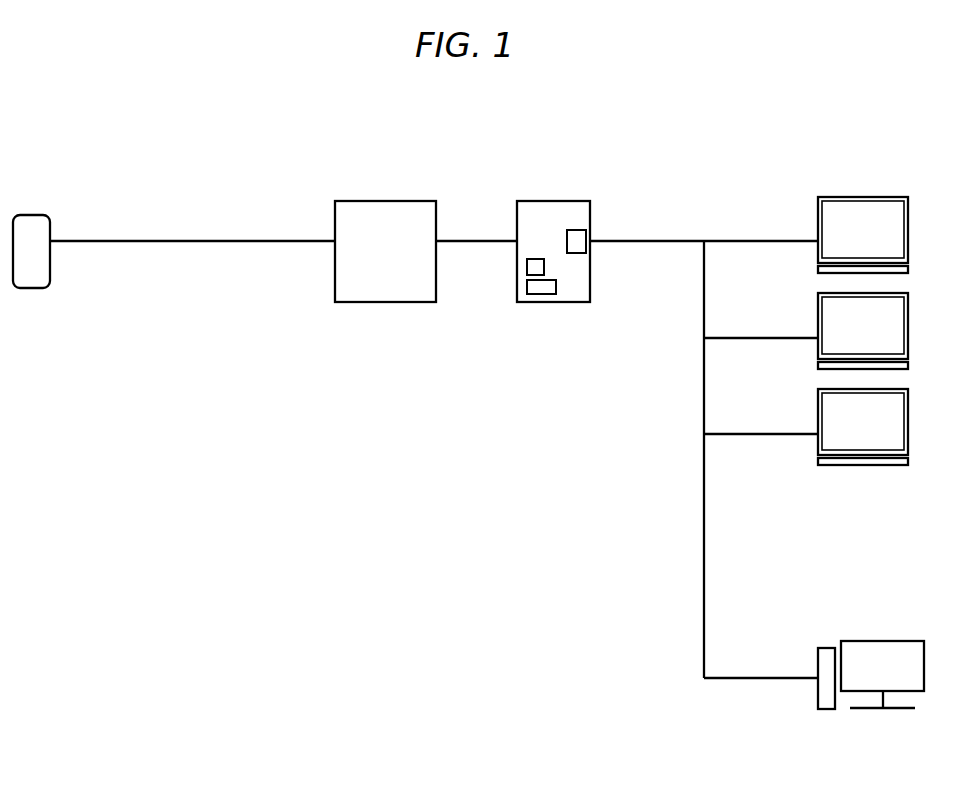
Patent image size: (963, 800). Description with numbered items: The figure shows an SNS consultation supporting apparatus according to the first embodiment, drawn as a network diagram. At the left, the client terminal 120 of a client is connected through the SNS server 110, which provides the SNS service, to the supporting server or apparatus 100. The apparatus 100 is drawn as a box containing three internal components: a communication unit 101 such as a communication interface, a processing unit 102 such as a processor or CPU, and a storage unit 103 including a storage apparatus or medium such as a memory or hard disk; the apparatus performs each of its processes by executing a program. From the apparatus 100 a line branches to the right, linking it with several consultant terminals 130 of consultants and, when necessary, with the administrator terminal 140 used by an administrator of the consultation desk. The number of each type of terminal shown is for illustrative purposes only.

The SNS consultation supporting apparatus 100 is at (554, 200).
The communication unit 101 is at (580, 257).
The processing unit 102 is at (525, 266).
The storage unit 103 is at (546, 295).
The SNS server 110 is at (387, 200).
The client terminal 120 is at (33, 214).
The consultant terminal 130 is at (862, 196).
The administrator terminal 140 is at (884, 640).